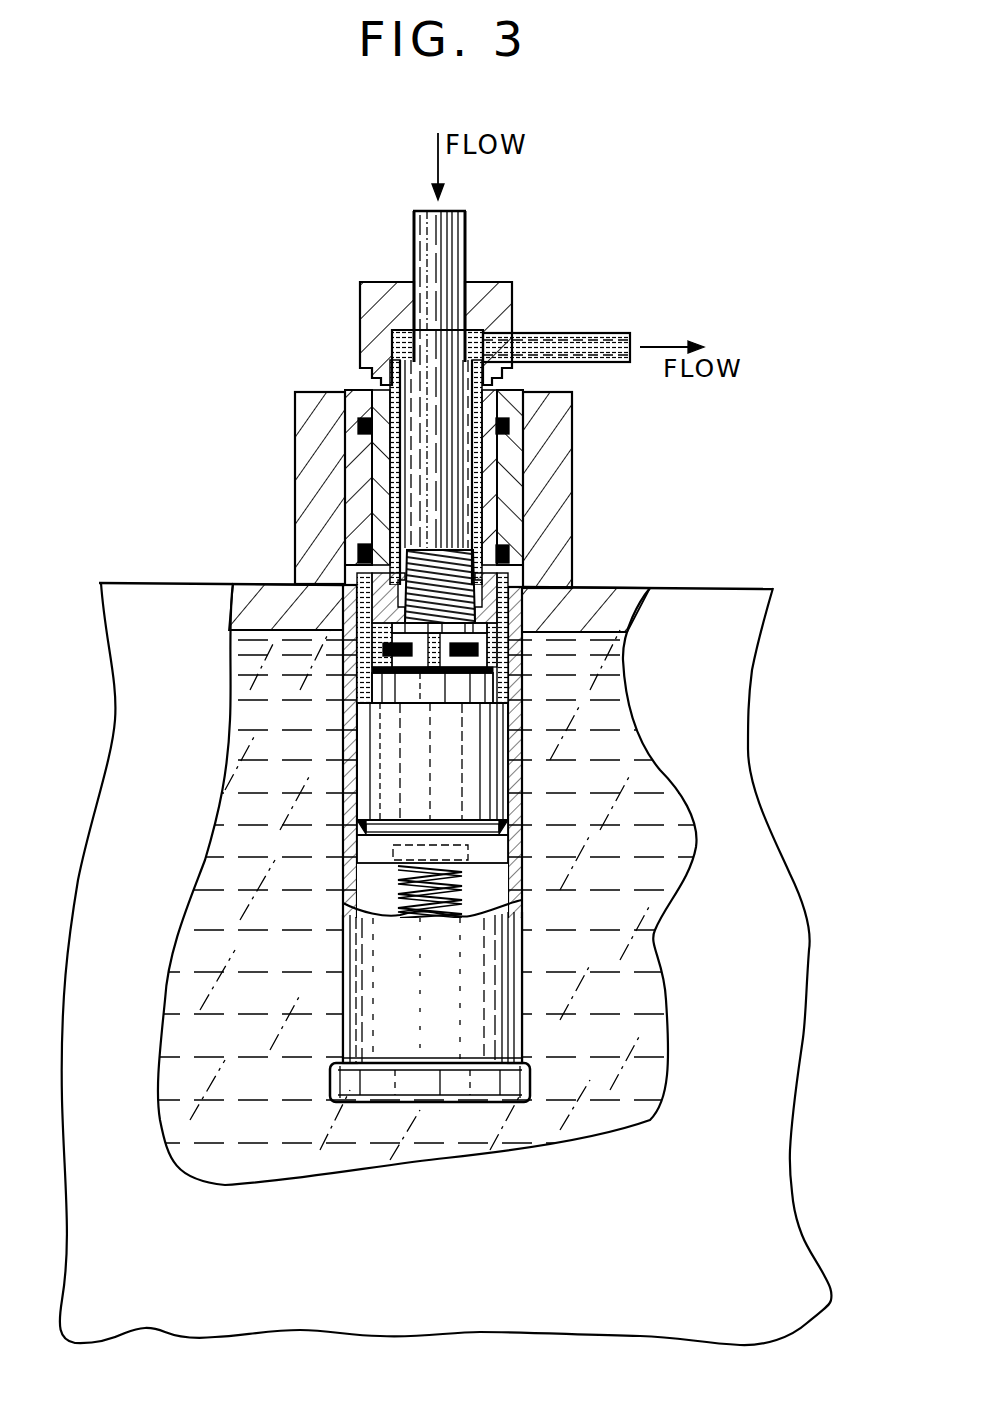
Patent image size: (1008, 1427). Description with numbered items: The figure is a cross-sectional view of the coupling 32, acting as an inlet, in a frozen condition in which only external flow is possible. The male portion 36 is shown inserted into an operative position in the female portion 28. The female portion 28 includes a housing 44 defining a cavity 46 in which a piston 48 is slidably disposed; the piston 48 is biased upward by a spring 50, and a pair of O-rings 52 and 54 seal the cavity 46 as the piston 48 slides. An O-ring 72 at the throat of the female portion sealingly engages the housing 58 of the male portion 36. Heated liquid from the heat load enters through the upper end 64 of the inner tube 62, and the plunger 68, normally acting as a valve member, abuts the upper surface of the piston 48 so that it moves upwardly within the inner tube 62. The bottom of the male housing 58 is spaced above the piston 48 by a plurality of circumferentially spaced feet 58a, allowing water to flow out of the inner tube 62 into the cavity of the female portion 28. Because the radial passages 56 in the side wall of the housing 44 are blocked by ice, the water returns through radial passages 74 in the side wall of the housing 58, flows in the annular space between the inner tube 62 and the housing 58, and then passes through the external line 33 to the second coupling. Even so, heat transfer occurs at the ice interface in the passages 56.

The female portion 28 is at (532, 988).
The coupling 32 is at (190, 478).
The line 33 is at (598, 333).
The male portion 36 is at (352, 359).
The housing 44 is at (512, 878).
The cavity 46 is at (375, 883).
The piston 48 is at (390, 748).
The spring 50 is at (525, 905).
The O-ring 52 is at (510, 550).
The O-ring 54 is at (357, 832).
The radial passage 56 is at (343, 645).
The housing 58 is at (360, 318).
The feet 58a is at (343, 662).
The inner tube 62 is at (413, 225).
The upper end 64 is at (466, 235).
The plunger 68 is at (446, 680).
The O-ring 72 is at (360, 426).
The radial passage 74 is at (365, 578).